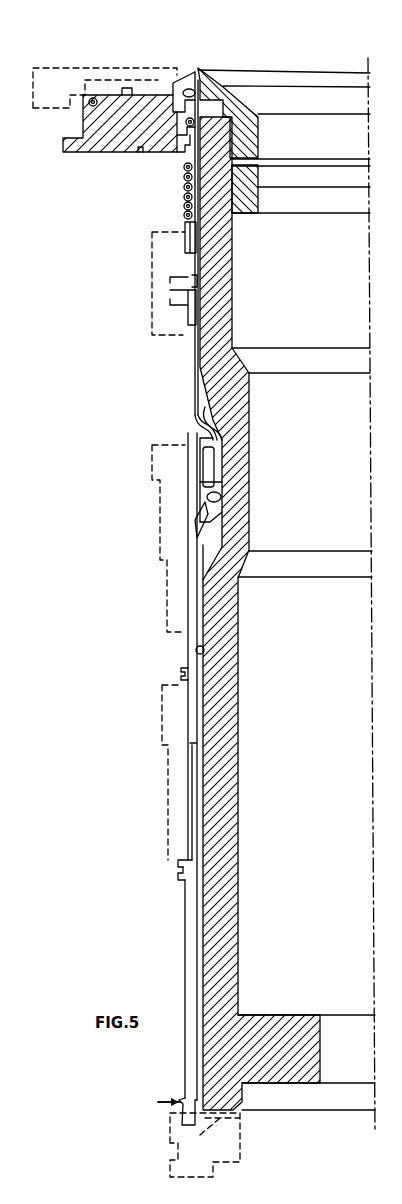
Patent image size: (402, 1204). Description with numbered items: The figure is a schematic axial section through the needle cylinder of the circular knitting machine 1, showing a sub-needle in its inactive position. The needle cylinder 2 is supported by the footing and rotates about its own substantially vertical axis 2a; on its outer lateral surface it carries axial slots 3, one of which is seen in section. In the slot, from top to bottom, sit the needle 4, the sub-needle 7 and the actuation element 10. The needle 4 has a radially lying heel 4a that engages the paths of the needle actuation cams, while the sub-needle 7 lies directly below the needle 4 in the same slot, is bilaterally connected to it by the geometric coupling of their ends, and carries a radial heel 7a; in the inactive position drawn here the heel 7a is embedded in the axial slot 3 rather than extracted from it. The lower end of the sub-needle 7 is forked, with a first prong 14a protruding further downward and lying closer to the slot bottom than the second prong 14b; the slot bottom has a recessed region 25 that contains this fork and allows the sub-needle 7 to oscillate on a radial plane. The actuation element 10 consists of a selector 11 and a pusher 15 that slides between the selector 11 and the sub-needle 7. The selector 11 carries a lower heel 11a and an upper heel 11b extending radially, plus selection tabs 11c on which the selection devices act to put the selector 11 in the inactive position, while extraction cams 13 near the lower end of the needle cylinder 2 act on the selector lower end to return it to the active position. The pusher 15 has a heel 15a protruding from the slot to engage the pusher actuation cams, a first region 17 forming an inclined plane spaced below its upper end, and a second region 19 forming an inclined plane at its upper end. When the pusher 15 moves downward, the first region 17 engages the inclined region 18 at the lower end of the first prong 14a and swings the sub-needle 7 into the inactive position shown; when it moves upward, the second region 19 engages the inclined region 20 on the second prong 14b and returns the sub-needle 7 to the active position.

The circular knitting machine 1 is at (163, 56).
The needle cylinder 2 is at (232, 862).
The axis 2a is at (345, 63).
The axial slot 3 is at (203, 655).
The needle 4 is at (195, 253).
The heel 4a is at (185, 310).
The sub-needle 7 is at (195, 375).
The heel 7a is at (194, 427).
The actuation element 10 is at (132, 679).
The selector 11 is at (193, 915).
The lower heel 11a is at (182, 1097).
The upper heel 11b is at (178, 866).
The selection tab 11c is at (180, 877).
The extraction cam 13 is at (180, 1147).
The first prong 14a is at (212, 511).
The second prong 14b is at (200, 470).
The pusher 15 is at (195, 604).
The heel 15a is at (185, 676).
The first region 17 is at (202, 543).
The region 18 is at (207, 496).
The second region 19 is at (200, 510).
The region 20 is at (203, 482).
The recessed region 25 is at (213, 413).